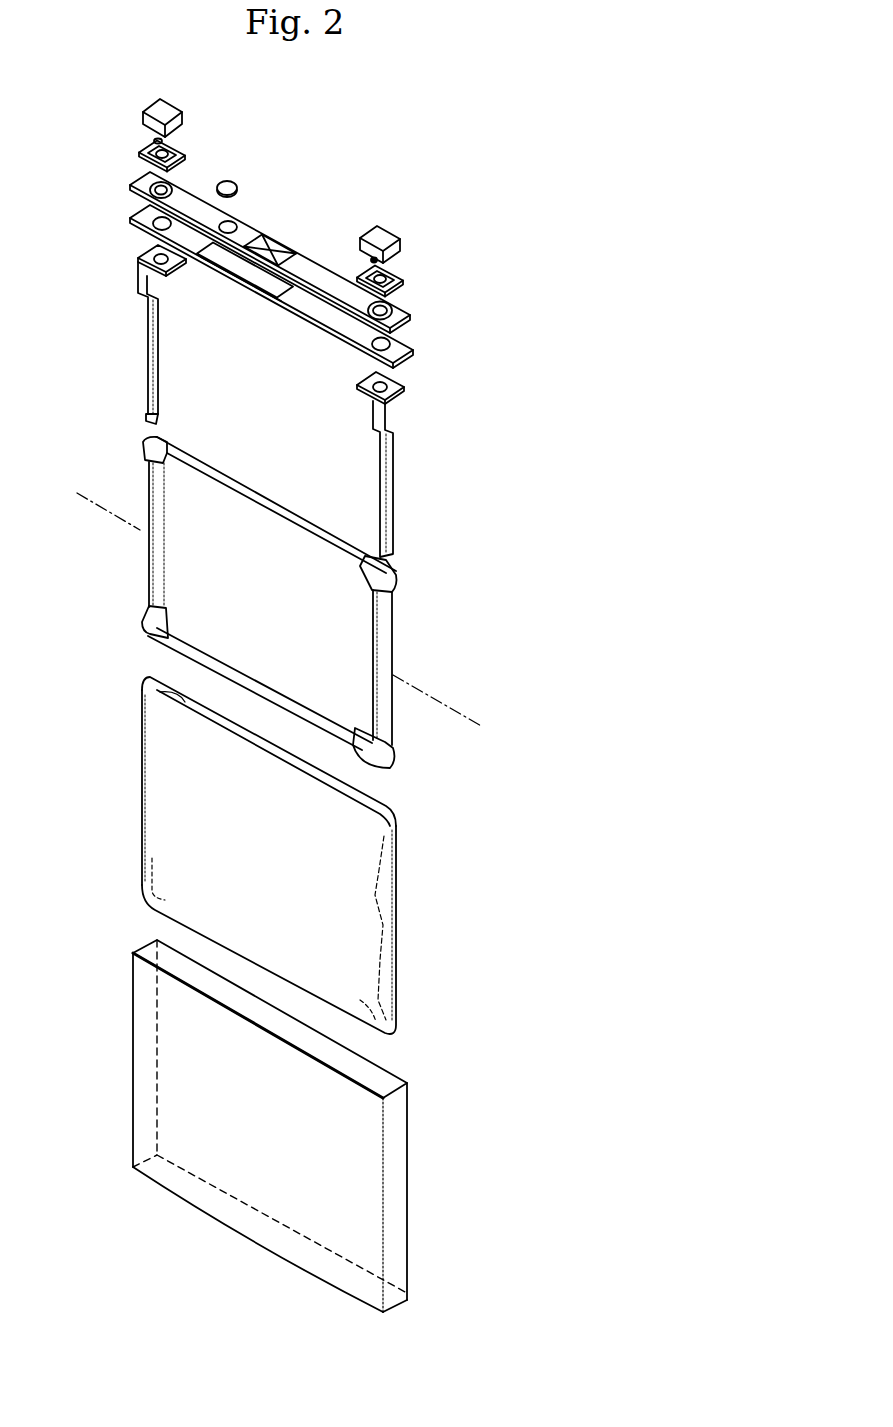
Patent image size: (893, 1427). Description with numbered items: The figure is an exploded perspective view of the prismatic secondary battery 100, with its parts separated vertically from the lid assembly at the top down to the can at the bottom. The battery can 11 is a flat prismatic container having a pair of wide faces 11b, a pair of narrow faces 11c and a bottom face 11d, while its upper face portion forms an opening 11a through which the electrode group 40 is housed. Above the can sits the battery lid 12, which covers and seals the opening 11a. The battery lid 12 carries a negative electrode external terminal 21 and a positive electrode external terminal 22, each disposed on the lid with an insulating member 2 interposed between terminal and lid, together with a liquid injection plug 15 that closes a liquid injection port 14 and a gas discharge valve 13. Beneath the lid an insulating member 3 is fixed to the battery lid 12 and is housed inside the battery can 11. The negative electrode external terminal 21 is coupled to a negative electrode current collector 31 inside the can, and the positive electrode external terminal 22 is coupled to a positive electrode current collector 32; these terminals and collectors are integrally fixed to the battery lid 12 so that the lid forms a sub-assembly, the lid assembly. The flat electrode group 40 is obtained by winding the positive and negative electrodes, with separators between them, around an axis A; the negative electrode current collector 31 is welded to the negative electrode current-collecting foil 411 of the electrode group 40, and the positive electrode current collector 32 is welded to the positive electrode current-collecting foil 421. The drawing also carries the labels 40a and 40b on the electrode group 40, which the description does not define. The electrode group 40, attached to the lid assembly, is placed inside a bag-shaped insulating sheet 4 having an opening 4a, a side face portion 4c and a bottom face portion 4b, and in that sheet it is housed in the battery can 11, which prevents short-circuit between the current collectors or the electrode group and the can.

The prismatic secondary battery 100 is at (470, 160).
The insulating member 2 is at (143, 148).
The insulating member 3 is at (405, 350).
The insulating sheet 4 is at (271, 855).
The opening 4a is at (160, 698).
The bottom face portion 4b is at (165, 920).
The side face portion 4c is at (152, 806).
The battery can 11 is at (287, 1126).
The opening 11a is at (387, 1070).
The wide faces 11b is at (177, 1068).
The narrow faces 11c is at (395, 1202).
The bottom face 11d is at (252, 1217).
The battery lid 12 is at (299, 257).
The gas discharge valve 13 is at (274, 242).
The liquid injection port 14 is at (232, 223).
The liquid injection plug 15 is at (233, 183).
The negative electrode external terminal 21 is at (396, 232).
The positive electrode external terminal 22 is at (180, 110).
The negative electrode current collector 31 is at (412, 450).
The positive electrode current collector 32 is at (120, 328).
The electrode group 40 is at (282, 591).
The frame side portion 40a is at (180, 510).
The frame rail 40b is at (213, 472).
The negative electrode current-collecting foil 411 is at (382, 650).
The positive electrode current-collecting foil 421 is at (157, 570).
The axis A is at (460, 575).